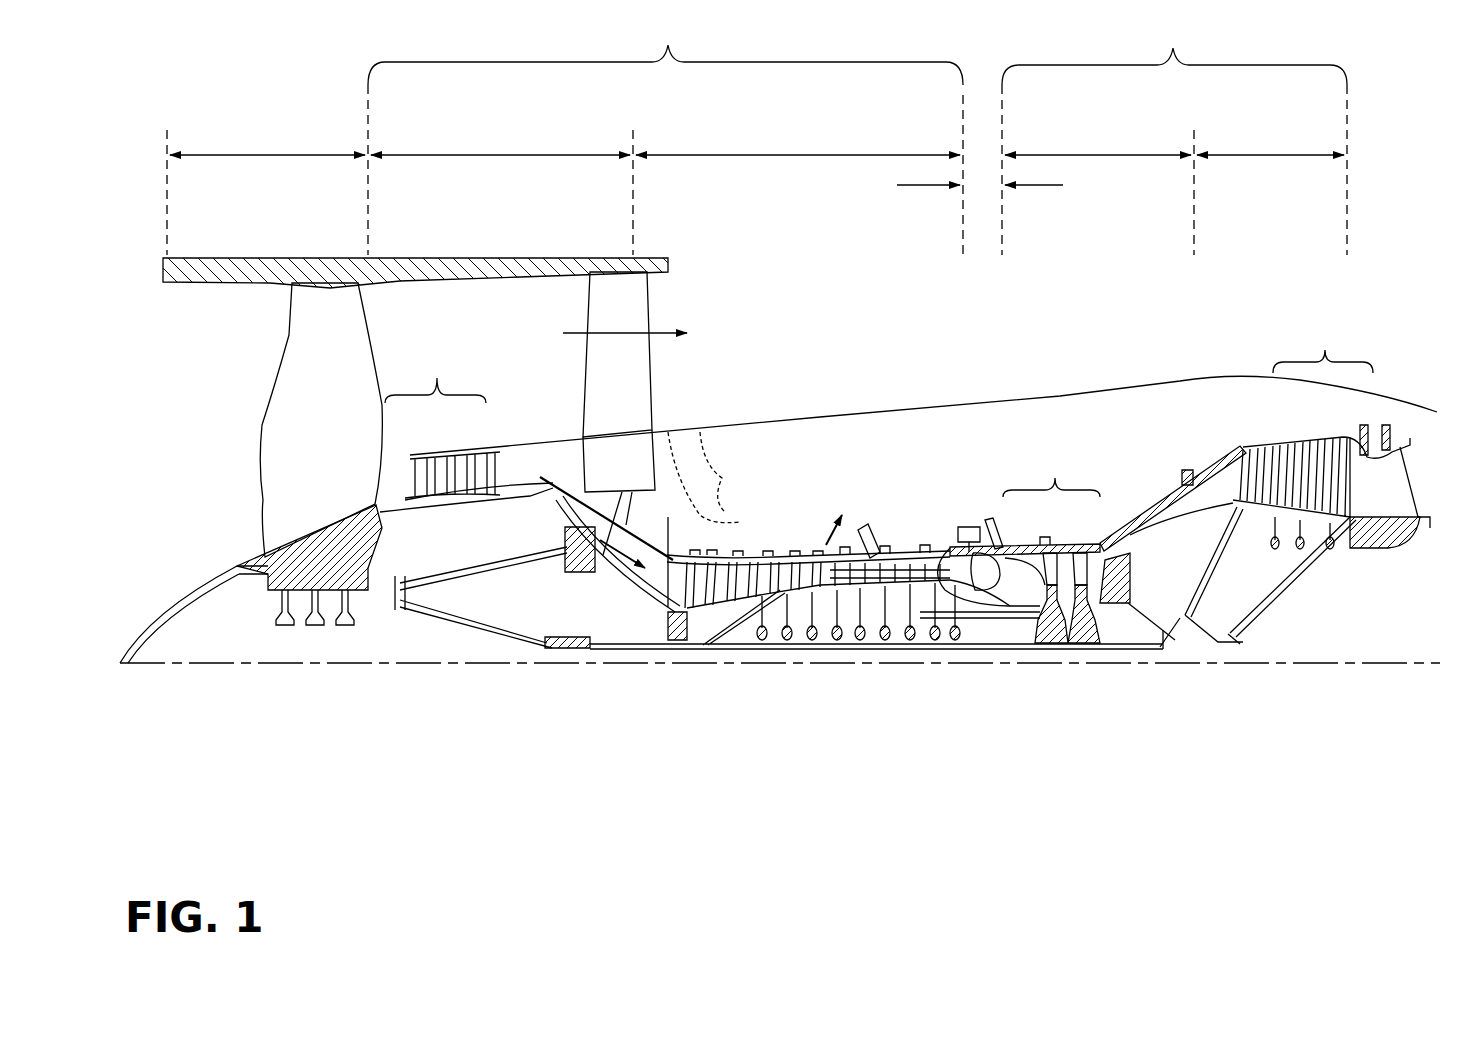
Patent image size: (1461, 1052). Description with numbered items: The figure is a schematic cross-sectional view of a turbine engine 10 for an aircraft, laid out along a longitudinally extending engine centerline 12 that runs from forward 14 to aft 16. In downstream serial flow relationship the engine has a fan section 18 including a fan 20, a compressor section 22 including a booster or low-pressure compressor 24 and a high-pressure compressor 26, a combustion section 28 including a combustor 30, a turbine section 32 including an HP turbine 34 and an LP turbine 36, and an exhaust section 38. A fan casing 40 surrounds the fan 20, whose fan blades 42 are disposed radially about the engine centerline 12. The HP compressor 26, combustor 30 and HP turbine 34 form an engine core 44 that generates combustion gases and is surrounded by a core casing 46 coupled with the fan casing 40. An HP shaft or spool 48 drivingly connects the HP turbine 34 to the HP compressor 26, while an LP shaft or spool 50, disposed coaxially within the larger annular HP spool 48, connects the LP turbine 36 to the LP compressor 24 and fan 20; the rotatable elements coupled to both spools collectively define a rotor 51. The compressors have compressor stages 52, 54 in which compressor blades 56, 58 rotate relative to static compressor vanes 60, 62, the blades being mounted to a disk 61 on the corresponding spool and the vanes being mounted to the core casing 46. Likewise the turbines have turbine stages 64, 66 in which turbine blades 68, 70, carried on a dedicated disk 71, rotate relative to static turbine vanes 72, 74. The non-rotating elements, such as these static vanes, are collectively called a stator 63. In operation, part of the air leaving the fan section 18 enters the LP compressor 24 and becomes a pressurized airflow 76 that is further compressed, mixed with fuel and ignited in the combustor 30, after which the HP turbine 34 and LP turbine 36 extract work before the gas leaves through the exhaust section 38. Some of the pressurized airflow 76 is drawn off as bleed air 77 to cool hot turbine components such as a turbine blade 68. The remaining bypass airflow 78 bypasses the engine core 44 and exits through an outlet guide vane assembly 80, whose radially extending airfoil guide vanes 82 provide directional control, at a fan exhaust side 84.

The turbine engine 10 is at (1362, 185).
The engine centerline 12 is at (248, 663).
The forward 14 is at (200, 393).
The aft 16 is at (1447, 487).
The fan section 18 is at (268, 153).
The fan 20 is at (243, 512).
The compressor section 22 is at (668, 45).
The low-pressure compressor 24 is at (500, 153).
The high-pressure compressor 26 is at (798, 153).
The combustion section 28 is at (910, 188).
The combustor 30 is at (995, 540).
The turbine section 32 is at (1173, 48).
The HP turbine 34 is at (1097, 153).
The LP turbine 36 is at (1270, 153).
The exhaust section 38 is at (1410, 462).
The fan casing 40 is at (402, 258).
The fan blades 42 is at (345, 326).
The engine core 44 is at (925, 440).
The core casing 46 is at (1172, 478).
The HP shaft or spool 48 is at (965, 622).
The LP shaft or spool 50 is at (566, 650).
The rotor 51 is at (827, 653).
The compressor stages 52 is at (437, 378).
The compressor stages 54 is at (797, 547).
The compressor blades 56 is at (442, 470).
The compressor blades 58 is at (718, 585).
The static compressor vanes 60 is at (432, 468).
The disk 61 is at (462, 500).
The static compressor vanes 62 is at (695, 545).
The stator 63 is at (698, 605).
The turbine stages 64 is at (1055, 478).
The turbine stages 66 is at (1325, 350).
The turbine blades 68 is at (1062, 553).
The turbine blades 70 is at (1333, 440).
The disk 71 is at (1068, 603).
The static turbine vanes 72 is at (1043, 553).
The static turbine vanes 74 is at (1315, 450).
The pressurized airflow 76 is at (600, 572).
The bleed air 77 is at (822, 520).
The bypass airflow 78 is at (580, 338).
The outlet guide vane assembly 80 is at (668, 395).
The airfoil guide vanes 82 is at (593, 368).
The fan exhaust side 84 is at (668, 302).